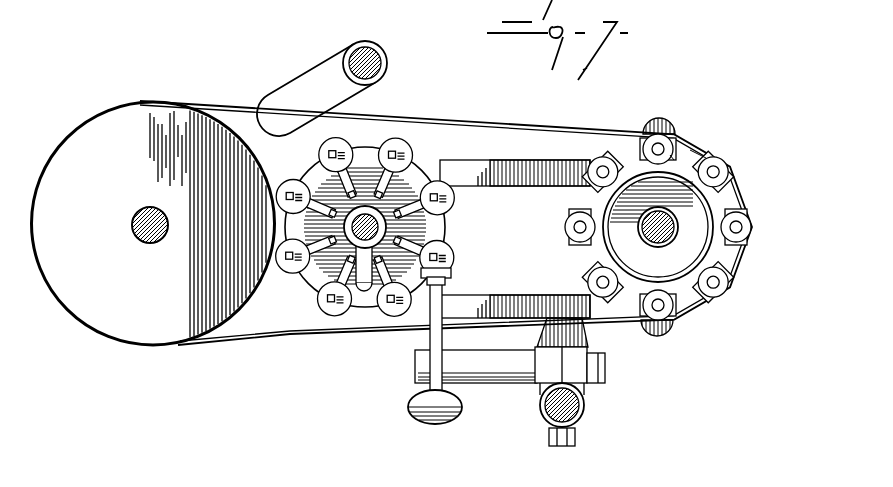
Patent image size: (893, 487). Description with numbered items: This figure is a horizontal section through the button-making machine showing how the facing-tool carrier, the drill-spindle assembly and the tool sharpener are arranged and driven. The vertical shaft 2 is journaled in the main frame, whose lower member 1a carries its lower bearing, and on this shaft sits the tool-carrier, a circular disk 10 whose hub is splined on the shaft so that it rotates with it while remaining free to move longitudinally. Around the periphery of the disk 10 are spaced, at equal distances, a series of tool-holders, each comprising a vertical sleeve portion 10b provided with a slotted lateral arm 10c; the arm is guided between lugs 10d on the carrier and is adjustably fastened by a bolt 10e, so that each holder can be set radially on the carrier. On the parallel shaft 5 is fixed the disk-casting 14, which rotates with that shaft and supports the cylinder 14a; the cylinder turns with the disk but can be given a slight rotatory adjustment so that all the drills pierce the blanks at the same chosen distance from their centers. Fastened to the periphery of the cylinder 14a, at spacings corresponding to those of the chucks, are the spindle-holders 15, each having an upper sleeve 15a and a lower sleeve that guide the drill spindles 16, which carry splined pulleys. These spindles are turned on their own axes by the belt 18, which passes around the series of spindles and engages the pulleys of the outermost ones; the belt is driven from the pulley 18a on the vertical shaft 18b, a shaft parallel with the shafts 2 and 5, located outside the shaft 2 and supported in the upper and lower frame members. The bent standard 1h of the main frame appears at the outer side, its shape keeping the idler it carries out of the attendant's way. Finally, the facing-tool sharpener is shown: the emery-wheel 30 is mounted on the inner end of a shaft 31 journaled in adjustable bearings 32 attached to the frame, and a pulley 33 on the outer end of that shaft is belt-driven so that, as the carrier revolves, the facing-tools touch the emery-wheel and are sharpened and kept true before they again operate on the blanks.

The lower member of the main frame 1a is at (551, 187).
The standard of the main frame 1h is at (388, 66).
The vertical shaft 2 is at (290, 283).
The shaft 5 is at (672, 213).
The circular disk 10 is at (398, 222).
The vertical sleeve portion 10b is at (449, 184).
The slotted lateral arm 10c is at (413, 176).
The lugs 10d is at (316, 192).
The bolt 10e is at (366, 166).
The disk-casting 14 is at (658, 227).
The cylinder 14a is at (692, 178).
The spindle-holders 15 is at (678, 160).
The upper sleeve 15a is at (753, 227).
The spindles 16 is at (718, 173).
The belt 18 is at (586, 124).
The pulley 18a is at (154, 338).
The vertical shaft 18b is at (143, 242).
The emery-wheel 30 is at (456, 274).
The shaft 31 is at (416, 348).
The adjustable bearings 32 is at (590, 388).
The pulley 33 is at (414, 396).